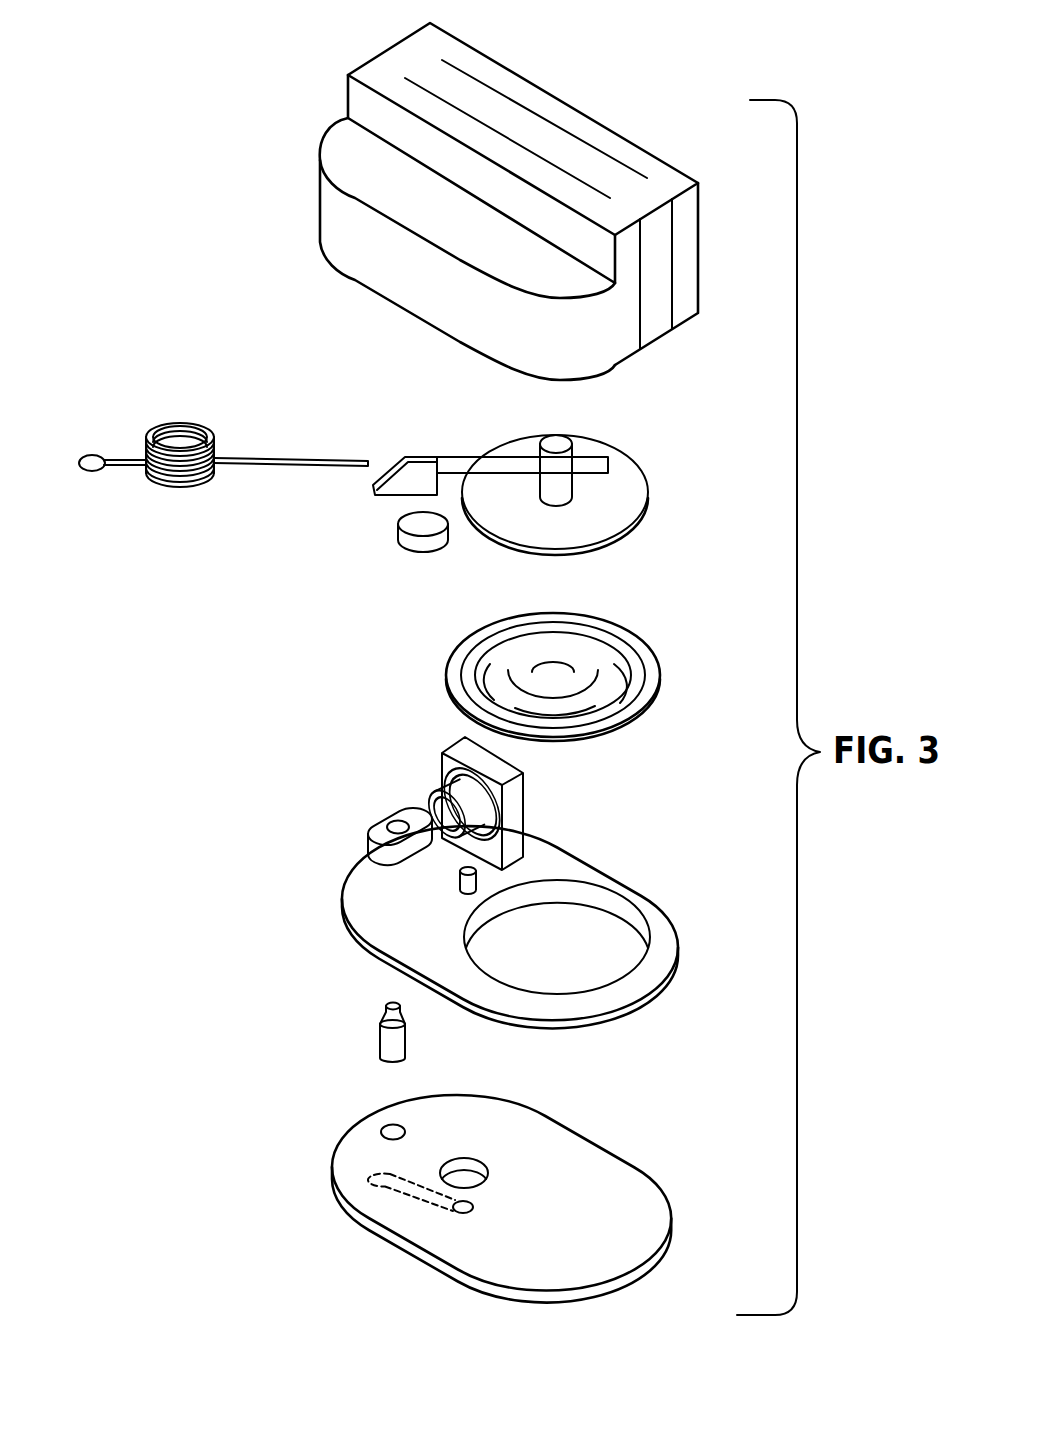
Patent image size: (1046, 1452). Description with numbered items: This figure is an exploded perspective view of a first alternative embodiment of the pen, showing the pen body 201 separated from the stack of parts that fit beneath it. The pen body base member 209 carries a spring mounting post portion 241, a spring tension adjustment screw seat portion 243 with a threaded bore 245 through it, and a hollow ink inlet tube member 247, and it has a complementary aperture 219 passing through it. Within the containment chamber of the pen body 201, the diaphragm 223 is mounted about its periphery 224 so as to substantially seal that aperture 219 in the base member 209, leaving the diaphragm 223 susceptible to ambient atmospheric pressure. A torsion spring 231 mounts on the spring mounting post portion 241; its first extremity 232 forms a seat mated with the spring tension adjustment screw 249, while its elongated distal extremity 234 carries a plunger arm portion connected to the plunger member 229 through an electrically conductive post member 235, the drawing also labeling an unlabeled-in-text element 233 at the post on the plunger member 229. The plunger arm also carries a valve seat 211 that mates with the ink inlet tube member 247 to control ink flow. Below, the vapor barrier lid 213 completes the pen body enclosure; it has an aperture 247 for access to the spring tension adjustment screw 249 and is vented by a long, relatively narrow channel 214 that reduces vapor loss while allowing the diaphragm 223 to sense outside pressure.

The pen body 201 is at (700, 237).
The pen body base member 209 is at (650, 913).
The valve seat 211 is at (416, 551).
The vapor barrier lid 213 is at (628, 1185).
The channel 214 is at (398, 1185).
The aperture 219 is at (575, 952).
The diaphragm 223 is at (648, 705).
The periphery 224 is at (629, 622).
The plunger member 229 is at (632, 497).
The torsion spring 231 is at (193, 424).
The first extremity 232 is at (94, 458).
The pin 233 is at (572, 449).
The distal extremity 234 is at (255, 455).
The electrically conductive post member 235 is at (555, 436).
The spring mounting post portion 241 is at (457, 748).
The spring tension adjustment screw seat portion 243 is at (368, 844).
The threaded bore 245 is at (396, 821).
The hollow ink inlet tube member 247 is at (462, 889).
The spring tension adjustment screw 249 is at (377, 1043).